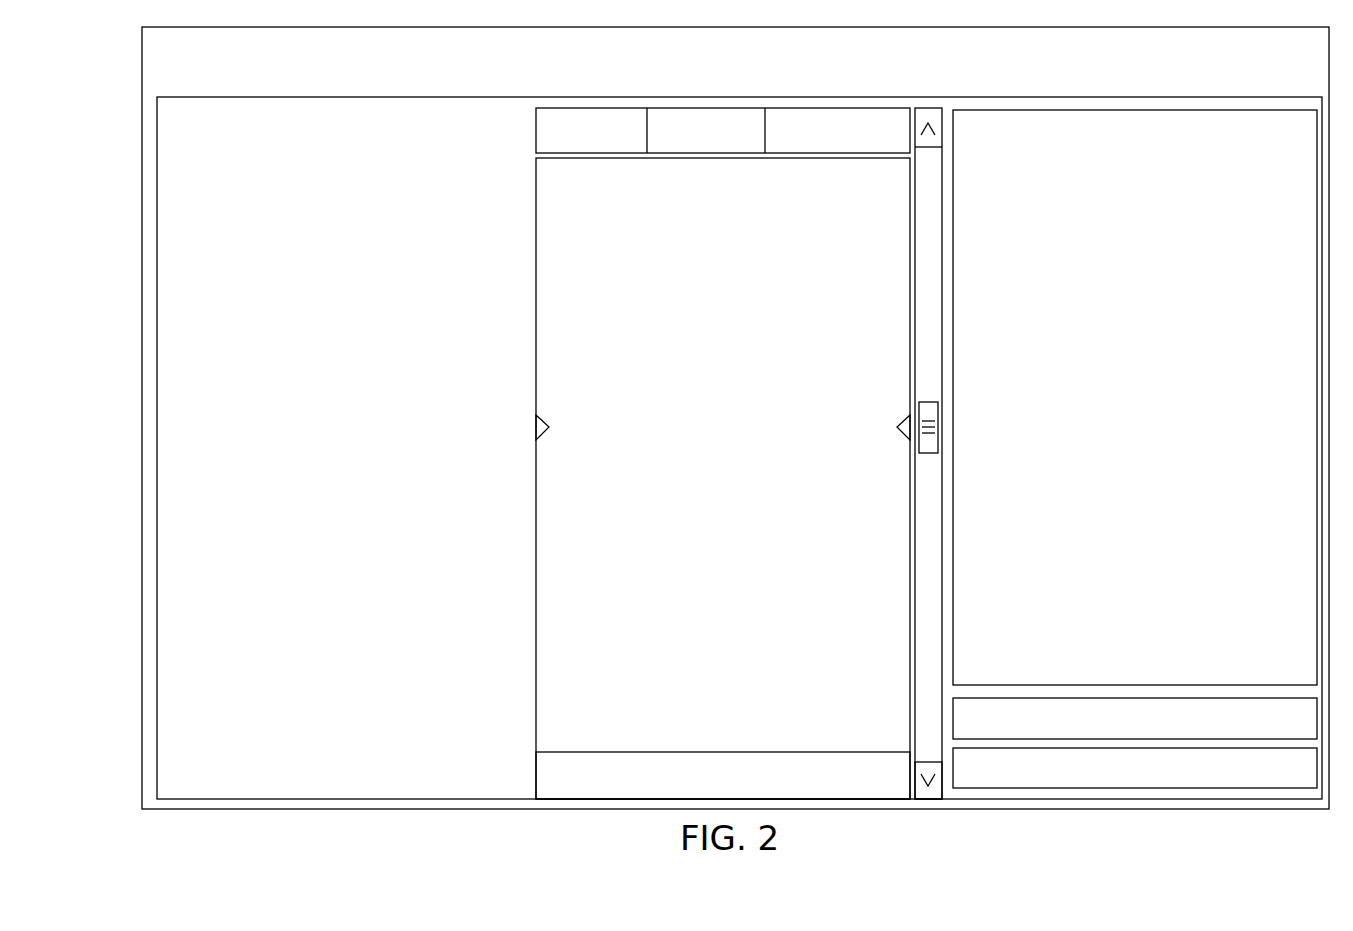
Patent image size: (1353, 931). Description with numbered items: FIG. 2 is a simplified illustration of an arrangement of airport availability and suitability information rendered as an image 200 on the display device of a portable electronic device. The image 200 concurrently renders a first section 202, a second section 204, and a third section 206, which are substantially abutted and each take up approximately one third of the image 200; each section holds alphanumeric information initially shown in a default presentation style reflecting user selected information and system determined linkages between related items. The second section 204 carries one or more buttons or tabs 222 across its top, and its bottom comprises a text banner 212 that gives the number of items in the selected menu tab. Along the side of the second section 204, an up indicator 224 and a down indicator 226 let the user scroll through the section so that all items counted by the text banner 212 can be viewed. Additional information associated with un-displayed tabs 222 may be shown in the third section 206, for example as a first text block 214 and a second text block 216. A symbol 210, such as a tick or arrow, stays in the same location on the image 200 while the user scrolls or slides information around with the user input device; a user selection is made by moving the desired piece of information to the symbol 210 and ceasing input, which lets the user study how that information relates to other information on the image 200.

The image 200 is at (141, 126).
The first section 202 is at (156, 662).
The second section 204 is at (535, 221).
The third section 206 is at (1100, 110).
The symbol 210 is at (549, 427).
The text banner 212 is at (710, 771).
The first text block 214 is at (1033, 712).
The second text block 216 is at (1148, 781).
The tabs 222 is at (600, 108).
The up indicator 224 is at (925, 108).
The down indicator 226 is at (910, 792).